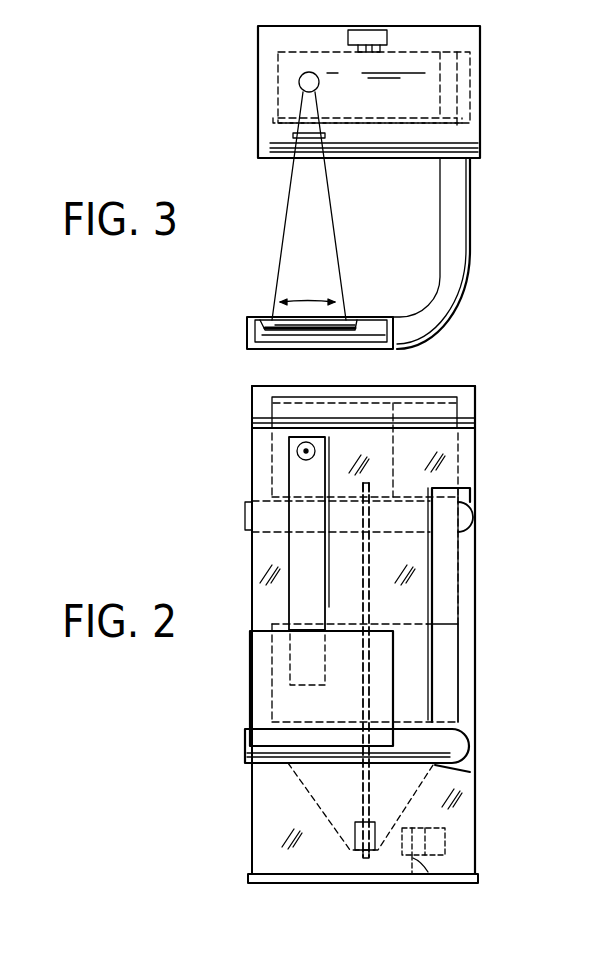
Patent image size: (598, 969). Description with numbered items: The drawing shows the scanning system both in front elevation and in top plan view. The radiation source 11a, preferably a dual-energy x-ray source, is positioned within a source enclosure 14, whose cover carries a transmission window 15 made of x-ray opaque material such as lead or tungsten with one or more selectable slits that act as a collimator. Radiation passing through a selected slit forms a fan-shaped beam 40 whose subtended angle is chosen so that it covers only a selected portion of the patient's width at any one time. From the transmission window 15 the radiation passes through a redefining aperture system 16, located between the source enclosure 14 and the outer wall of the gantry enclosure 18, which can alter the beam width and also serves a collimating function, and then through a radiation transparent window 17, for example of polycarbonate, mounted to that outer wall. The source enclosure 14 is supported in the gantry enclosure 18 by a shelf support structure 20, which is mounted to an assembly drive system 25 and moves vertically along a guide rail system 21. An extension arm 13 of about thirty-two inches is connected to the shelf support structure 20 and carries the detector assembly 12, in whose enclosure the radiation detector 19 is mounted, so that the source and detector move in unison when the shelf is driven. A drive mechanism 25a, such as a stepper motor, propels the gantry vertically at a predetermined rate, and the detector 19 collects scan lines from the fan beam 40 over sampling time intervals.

In FIG. 3, the radiation source 11a is at (296, 89).
In FIG. 2, the detector assembly 12 is at (250, 693).
In FIG. 3, the extension arm 13 is at (476, 243).
In FIG. 3, the source enclosure 14 is at (431, 90).
In FIG. 3, the transmission window 15 is at (280, 130).
In FIG. 3, the redefining aperture system 16 is at (278, 160).
In FIG. 2, the radiation transparent window 17 is at (292, 552).
In FIG. 2, the gantry enclosure 18 is at (469, 384).
In FIG. 2, the radiation detector 19 is at (250, 648).
In FIG. 2, the shelf support structure 20 is at (429, 719).
In FIG. 2, the guide rail system 21 is at (358, 771).
In FIG. 2, the assembly drive system 25 is at (431, 788).
In FIG. 2, the drive mechanism 25a is at (437, 828).
In FIG. 3, the fan-shaped beam 40 is at (281, 268).